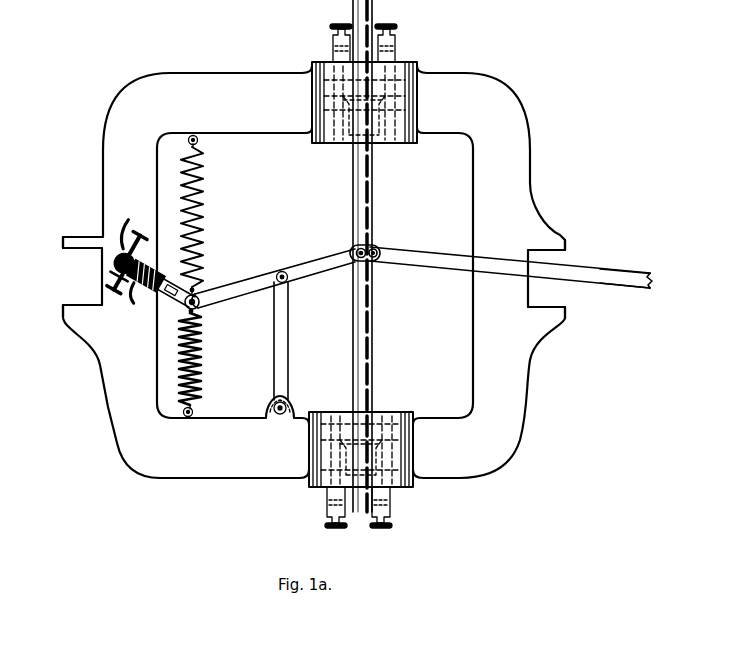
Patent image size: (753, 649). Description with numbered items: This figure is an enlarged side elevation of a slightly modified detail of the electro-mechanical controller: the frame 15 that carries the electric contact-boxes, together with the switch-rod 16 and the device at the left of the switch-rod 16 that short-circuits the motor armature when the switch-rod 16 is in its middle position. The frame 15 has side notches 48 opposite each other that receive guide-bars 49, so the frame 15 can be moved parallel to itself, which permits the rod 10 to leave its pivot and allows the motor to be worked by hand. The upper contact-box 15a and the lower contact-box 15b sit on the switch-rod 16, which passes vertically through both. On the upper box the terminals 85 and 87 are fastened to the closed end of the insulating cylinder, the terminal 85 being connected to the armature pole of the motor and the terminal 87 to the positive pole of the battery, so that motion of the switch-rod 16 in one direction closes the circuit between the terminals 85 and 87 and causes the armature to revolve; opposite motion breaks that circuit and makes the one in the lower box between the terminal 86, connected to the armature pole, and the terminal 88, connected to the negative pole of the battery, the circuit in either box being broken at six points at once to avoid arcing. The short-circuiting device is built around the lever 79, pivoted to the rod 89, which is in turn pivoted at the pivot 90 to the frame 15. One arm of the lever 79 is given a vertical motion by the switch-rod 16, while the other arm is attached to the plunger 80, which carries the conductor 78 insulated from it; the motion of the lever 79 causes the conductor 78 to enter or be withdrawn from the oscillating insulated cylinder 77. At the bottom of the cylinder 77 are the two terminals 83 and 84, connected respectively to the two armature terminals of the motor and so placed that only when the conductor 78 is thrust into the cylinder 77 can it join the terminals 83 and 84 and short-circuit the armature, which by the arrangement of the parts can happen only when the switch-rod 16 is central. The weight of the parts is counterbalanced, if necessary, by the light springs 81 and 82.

The rod 10 is at (641, 270).
The frame 15 is at (314, 272).
The upper bearing block of casing 15a is at (364, 102).
The lower bearing block of casing 15b is at (361, 449).
The switch-rod 16 is at (372, 204).
The side notches 48 is at (82, 222).
The guide-bars 49 is at (50, 292).
The oscillating insulated cylinder 77 is at (146, 264).
The conductor 78 is at (155, 298).
The lever 79 is at (246, 284).
The plunger 80 is at (186, 307).
The light spring 81 is at (201, 353).
The light spring 82 is at (203, 191).
The terminal 83 is at (137, 229).
The terminal 84 is at (113, 303).
The terminal 85 is at (396, 45).
The terminal 86 is at (391, 505).
The terminal 87 is at (333, 40).
The terminal 88 is at (326, 504).
The rod 89 is at (285, 330).
The pivot 90 is at (278, 421).